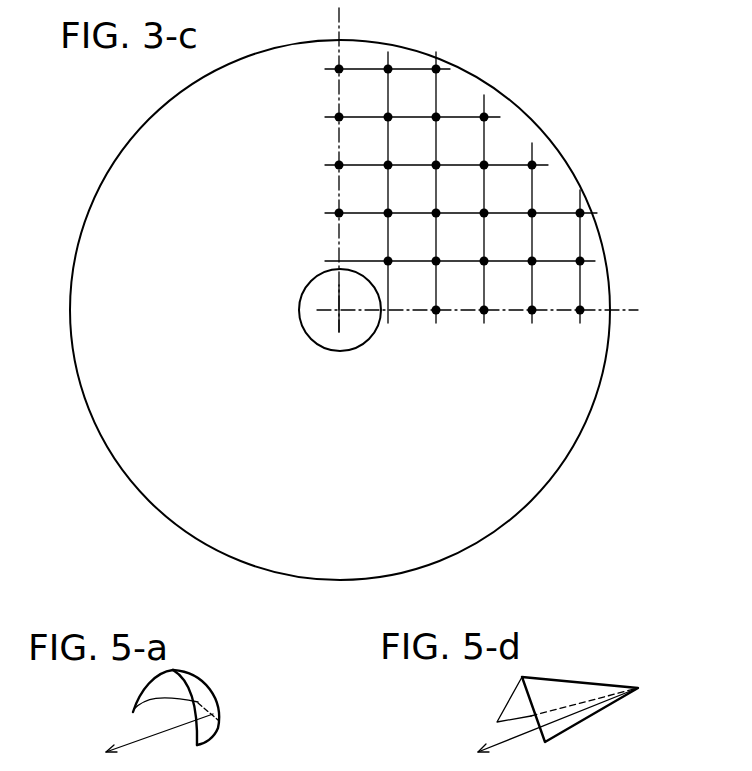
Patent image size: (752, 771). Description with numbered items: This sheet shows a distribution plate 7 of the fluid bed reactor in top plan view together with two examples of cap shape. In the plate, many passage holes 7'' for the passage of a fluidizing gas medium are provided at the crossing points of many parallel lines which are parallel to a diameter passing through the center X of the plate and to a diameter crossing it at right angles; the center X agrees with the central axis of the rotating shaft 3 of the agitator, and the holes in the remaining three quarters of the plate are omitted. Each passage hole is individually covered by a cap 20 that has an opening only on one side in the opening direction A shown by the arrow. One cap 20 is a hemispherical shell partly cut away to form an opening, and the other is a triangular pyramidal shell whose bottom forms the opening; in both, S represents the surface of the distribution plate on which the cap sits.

In FIG. 3-c, the distribution plate 7 is at (354, 294).
In FIG. 3-c, the passage holes 7'' is at (445, 177).
In FIG. 3-c, the rotating shaft 3 is at (322, 349).
In FIG. 3-c, the center of the plate X is at (339, 312).
In FIG. 5-a, the cap 20 is at (215, 670).
In FIG. 5-d, the cap 20 is at (590, 685).
In FIG. 5-a, the surface of the distribution plate S is at (170, 717).
In FIG. 5-d, the surface of the distribution plate S is at (521, 721).
In FIG. 5-a, the opening direction A is at (149, 742).
In FIG. 5-d, the opening direction A is at (548, 729).